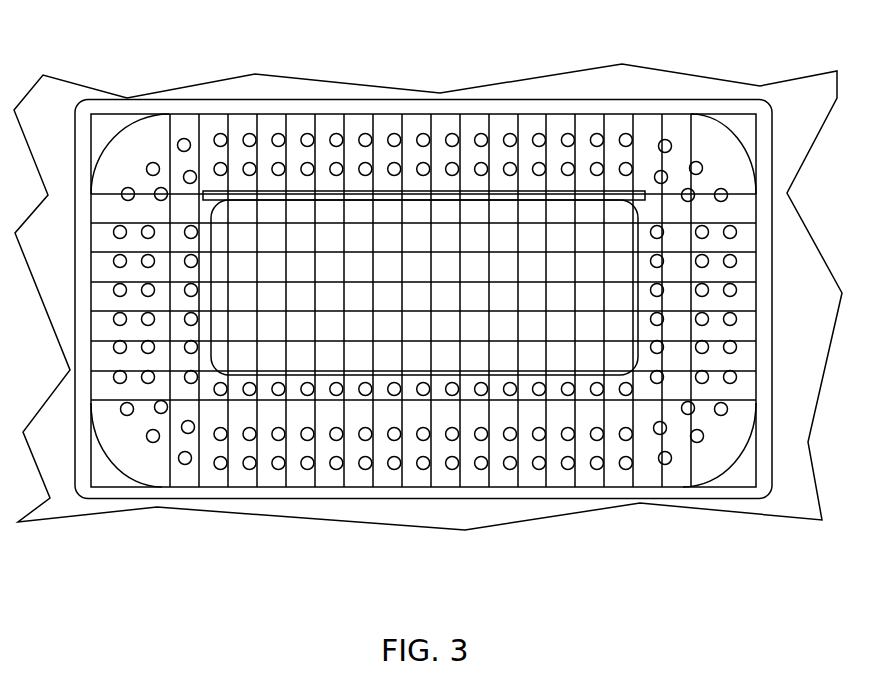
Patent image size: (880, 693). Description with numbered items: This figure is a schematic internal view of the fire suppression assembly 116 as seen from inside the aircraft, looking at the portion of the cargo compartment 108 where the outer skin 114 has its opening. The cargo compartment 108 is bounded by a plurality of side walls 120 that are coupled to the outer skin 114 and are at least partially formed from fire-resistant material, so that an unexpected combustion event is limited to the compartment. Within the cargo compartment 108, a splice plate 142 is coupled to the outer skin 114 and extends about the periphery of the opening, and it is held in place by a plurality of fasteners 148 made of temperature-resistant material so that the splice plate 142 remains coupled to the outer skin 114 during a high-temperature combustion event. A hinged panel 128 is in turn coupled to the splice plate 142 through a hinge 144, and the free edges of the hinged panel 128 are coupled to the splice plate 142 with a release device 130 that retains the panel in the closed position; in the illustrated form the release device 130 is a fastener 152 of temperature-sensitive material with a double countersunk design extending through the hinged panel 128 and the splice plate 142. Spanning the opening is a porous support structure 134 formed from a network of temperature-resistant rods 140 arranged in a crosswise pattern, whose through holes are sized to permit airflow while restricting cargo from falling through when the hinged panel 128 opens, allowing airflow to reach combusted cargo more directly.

The cargo compartment 108 is at (781, 100).
The outer skin 114 is at (769, 83).
The fire suppression assembly 116 is at (672, 213).
The side walls 120 is at (750, 500).
The hinged panel 128 is at (216, 216).
The release device 130 is at (674, 389).
The porous support structure 134 is at (152, 444).
The rods 140 is at (195, 478).
The splice plate 142 is at (120, 132).
The hinge 144 is at (641, 191).
The fasteners 148 is at (160, 466).
The fastener 152 is at (364, 399).